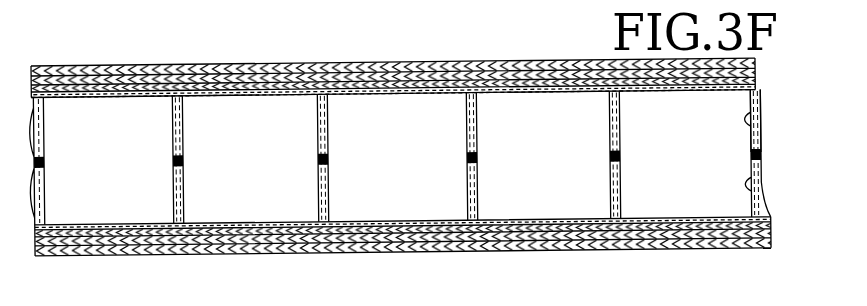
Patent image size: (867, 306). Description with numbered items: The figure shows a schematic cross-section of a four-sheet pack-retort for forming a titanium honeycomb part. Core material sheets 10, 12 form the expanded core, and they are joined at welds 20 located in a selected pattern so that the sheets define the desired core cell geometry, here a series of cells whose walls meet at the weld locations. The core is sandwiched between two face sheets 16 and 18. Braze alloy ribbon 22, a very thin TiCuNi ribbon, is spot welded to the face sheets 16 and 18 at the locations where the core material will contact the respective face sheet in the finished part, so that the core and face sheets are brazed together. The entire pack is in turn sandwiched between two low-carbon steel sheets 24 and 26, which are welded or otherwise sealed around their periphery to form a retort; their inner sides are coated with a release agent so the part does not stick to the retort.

The core material sheet 10 is at (760, 128).
The core material sheet 12 is at (760, 187).
The face sheet 16 is at (754, 62).
The face sheet 18 is at (772, 233).
The weld 20 is at (183, 160).
The braze alloy ribbon 22 is at (756, 78).
The steel sheet 24 is at (287, 65).
The steel sheet 26 is at (680, 248).